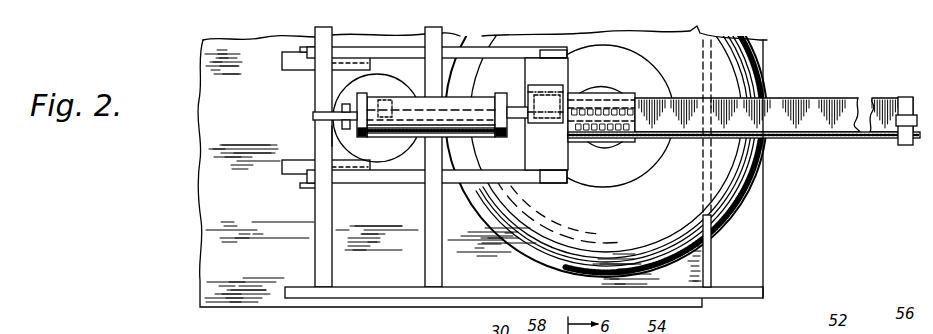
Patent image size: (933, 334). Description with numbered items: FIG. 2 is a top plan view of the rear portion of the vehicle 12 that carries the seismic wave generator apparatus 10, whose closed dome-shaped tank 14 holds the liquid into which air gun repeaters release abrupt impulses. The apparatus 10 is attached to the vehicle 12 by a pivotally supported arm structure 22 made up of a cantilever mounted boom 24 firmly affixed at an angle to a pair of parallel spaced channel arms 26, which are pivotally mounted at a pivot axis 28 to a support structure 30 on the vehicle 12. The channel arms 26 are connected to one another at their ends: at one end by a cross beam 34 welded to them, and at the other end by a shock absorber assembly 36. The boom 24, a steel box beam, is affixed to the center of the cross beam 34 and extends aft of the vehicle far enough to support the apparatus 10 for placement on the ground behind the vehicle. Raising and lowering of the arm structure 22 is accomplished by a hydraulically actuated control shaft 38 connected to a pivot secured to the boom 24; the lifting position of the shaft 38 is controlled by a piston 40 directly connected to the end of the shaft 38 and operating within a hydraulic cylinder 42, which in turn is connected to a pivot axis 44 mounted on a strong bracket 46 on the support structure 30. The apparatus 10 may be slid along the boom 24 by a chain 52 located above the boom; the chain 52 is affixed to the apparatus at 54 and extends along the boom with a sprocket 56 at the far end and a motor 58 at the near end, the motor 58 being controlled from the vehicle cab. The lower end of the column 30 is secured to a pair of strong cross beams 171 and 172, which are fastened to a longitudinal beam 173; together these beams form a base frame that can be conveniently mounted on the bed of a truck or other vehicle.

The seismic wave generator apparatus 10 is at (755, 194).
The vehicle 12 is at (226, 300).
The dome-shaped tank 14 is at (703, 236).
The pivotally supported arm structure 22 is at (627, 80).
The cantilever mounted boom 24 is at (793, 100).
The channel arms 26 is at (500, 46).
The pivot axis 28 is at (303, 181).
The support structure 30 is at (398, 164).
The cross beam 34 is at (571, 68).
The shock absorber assembly 36 is at (282, 56).
The hydraulically actuated control shaft 38 is at (467, 104).
The piston 40 is at (383, 101).
The hydraulic cylinder 42 is at (479, 137).
The pivot axis 44 is at (332, 135).
The bracket 46 is at (313, 115).
The chain 52 is at (798, 139).
The chain attachment point 54 is at (608, 148).
The sprocket 56 is at (913, 147).
The motor 58 is at (558, 83).
The cross beam 171 is at (315, 250).
The cross beam 172 is at (440, 252).
The longitudinal beam 173 is at (499, 269).